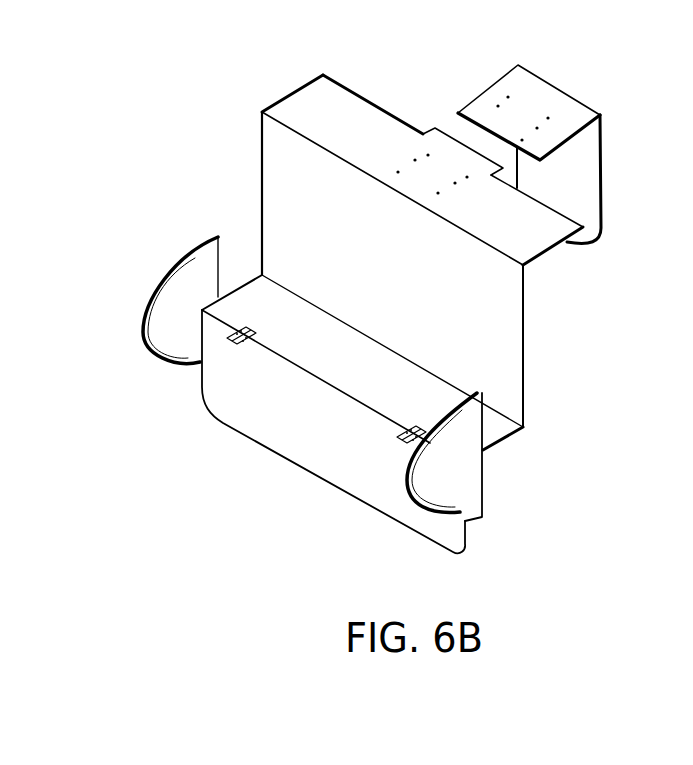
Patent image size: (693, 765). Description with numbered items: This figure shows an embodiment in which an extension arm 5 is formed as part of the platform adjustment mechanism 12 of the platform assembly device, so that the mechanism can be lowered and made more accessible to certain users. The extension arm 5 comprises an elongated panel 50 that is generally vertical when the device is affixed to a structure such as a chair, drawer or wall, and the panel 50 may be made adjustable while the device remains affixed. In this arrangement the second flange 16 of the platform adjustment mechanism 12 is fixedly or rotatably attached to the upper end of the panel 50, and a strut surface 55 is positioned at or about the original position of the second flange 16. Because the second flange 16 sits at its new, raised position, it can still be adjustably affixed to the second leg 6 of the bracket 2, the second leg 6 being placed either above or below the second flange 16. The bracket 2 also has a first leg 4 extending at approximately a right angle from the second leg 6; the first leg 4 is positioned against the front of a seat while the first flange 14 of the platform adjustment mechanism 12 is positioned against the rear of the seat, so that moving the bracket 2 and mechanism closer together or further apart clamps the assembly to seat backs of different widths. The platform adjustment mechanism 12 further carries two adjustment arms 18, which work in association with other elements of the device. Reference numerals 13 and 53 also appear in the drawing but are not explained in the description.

The bracket 2 is at (595, 90).
The first leg 4 is at (570, 180).
The extension arm 5 is at (548, 350).
The second leg 6 is at (540, 97).
The platform adjustment mechanism 12 is at (122, 396).
The mounting tab 13 is at (445, 143).
The first flange 14 is at (273, 425).
The second flange 16 is at (347, 118).
The adjustment arm 18 is at (183, 318).
The elongated panel 50 is at (277, 192).
The top fold edge 53 is at (312, 110).
The strut surface 55 is at (273, 300).